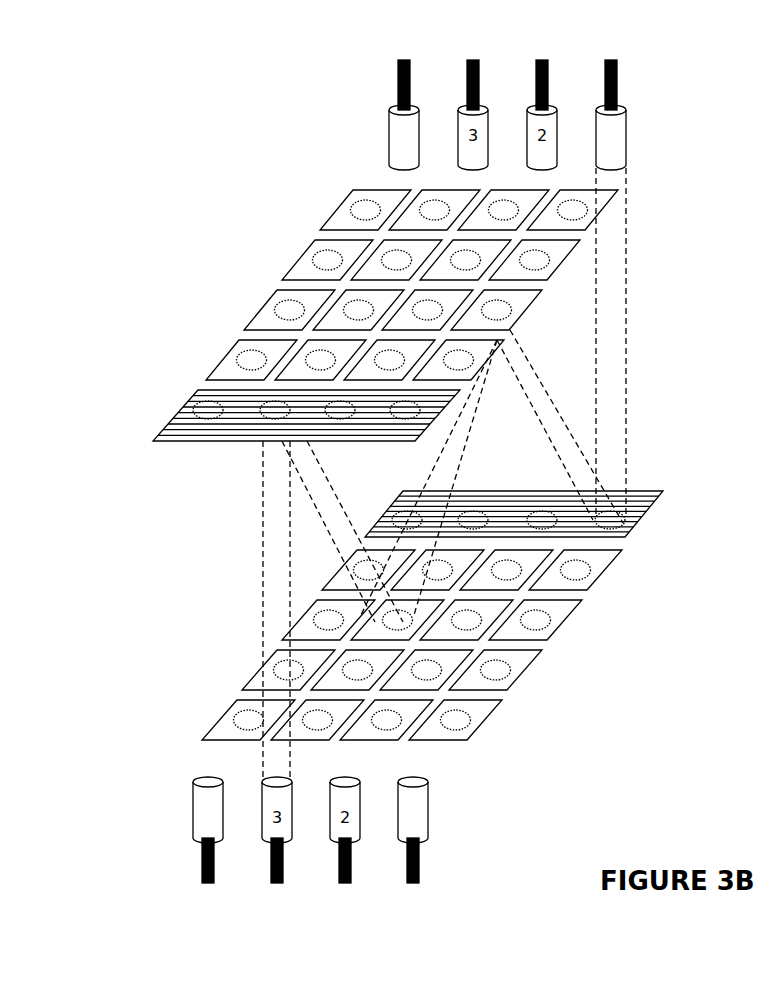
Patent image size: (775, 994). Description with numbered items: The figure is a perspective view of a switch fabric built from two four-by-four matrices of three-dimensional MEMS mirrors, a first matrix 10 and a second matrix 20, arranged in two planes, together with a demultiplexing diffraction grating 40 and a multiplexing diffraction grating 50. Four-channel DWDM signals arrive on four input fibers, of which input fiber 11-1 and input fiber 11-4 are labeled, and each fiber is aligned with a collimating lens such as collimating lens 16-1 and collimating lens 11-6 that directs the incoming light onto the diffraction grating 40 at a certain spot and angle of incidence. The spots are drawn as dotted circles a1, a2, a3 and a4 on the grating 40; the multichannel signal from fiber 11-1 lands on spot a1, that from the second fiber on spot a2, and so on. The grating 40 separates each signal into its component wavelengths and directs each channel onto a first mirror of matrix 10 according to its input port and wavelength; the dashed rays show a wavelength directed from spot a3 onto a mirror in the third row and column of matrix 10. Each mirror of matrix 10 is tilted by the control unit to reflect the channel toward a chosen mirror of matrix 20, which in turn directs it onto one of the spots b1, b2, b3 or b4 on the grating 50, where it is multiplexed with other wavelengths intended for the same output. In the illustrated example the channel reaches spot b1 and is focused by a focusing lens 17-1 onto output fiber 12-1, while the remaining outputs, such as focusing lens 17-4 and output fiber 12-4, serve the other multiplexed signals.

The first matrix of 3-D MEMS devices 10 is at (606, 680).
The second matrix of 3-D MEMS devices 20 is at (232, 260).
The demultiplexer (diffraction grating) 40 is at (220, 442).
The multiplexer (diffraction grating) 50 is at (658, 503).
The output fiber 12-4 is at (398, 88).
The output fiber 12-1 is at (616, 88).
The focusing lens 17-4 is at (391, 133).
The focusing lens 17-1 is at (624, 125).
The collimating lens 11-6 is at (196, 812).
The input fiber 11-4 is at (203, 856).
The collimating lens 16-1 is at (428, 800).
The input fiber 11-1 is at (420, 856).
The spot a1 is at (425, 408).
The spot a2 is at (355, 418).
The spot a3 is at (262, 417).
The spot a4 is at (194, 410).
The spot b-1 b1 is at (630, 532).
The spot b-2 b2 is at (540, 518).
The spot b-3 b3 is at (478, 518).
The spot b-4 b4 is at (390, 522).